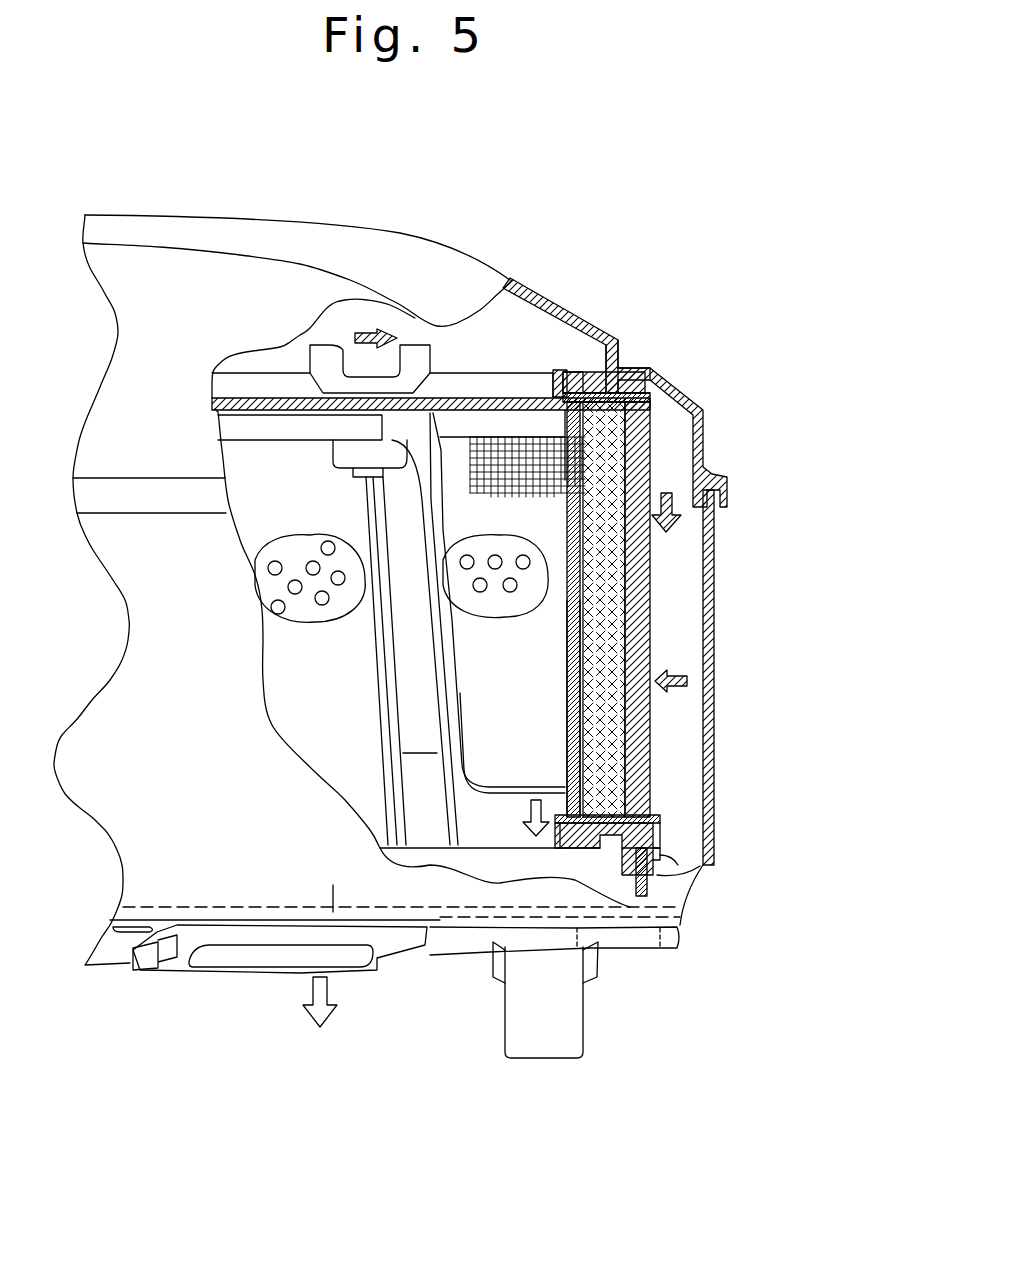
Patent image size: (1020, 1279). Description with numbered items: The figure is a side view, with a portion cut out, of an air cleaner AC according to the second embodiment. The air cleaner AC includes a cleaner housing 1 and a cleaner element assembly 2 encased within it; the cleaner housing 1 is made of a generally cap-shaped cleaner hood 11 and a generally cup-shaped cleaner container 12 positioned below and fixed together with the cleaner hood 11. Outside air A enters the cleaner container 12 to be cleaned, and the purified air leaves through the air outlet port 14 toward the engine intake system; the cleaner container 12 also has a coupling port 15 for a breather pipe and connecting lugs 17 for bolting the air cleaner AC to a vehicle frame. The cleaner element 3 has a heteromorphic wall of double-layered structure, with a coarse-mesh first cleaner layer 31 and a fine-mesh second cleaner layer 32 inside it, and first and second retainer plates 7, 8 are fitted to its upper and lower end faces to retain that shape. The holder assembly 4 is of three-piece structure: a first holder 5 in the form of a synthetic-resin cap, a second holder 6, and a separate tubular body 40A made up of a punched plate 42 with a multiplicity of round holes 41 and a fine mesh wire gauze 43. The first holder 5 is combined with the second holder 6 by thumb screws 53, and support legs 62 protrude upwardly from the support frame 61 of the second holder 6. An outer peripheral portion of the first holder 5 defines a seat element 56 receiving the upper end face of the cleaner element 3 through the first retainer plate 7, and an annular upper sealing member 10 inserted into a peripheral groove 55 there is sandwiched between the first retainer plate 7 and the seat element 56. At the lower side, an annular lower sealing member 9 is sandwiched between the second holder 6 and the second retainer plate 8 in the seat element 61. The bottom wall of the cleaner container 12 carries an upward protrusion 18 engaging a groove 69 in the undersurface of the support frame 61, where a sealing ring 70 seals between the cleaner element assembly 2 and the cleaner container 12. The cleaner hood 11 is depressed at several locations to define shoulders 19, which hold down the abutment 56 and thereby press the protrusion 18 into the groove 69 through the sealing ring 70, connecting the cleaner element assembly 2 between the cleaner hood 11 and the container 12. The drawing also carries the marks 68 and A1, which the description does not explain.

The air cleaner AC is at (168, 203).
The cleaner housing 1 is at (228, 208).
The cleaner element assembly 2 is at (455, 350).
The cleaner element 3 is at (685, 605).
The holder assembly 4 is at (647, 450).
The first holder 5 is at (457, 398).
The second holder 6 is at (657, 840).
The first retainer plate 7 is at (650, 400).
The second retainer plate 8 is at (660, 813).
The annular lower sealing member 9 is at (592, 849).
The annular upper sealing member 10 is at (597, 378).
The cleaner hood 11 is at (400, 237).
The cleaner container 12 is at (713, 673).
The air outlet port 14 is at (273, 957).
The coupling port 15 is at (543, 1040).
The connecting lugs 17 is at (677, 937).
The protrusion 18 is at (670, 867).
The shoulders 19 is at (622, 385).
The first cleaner layer 31 is at (640, 545).
The second cleaner layer 32 is at (613, 597).
The tubular body 40A is at (522, 640).
The round holes 41 is at (525, 557).
The punched plate 42 is at (572, 603).
The fine mesh wire gauze 43 is at (567, 720).
The thumb screw 53 is at (327, 345).
The peripheral groove 55 is at (580, 378).
The seat element 56 is at (653, 380).
The support frame 61 is at (663, 830).
The support legs 62 is at (413, 706).
The seal seat 68 is at (578, 849).
The groove 69 is at (673, 860).
The sealing ring 70 is at (653, 853).
The outside air A is at (373, 330).
The drain flow direction A1 is at (525, 815).